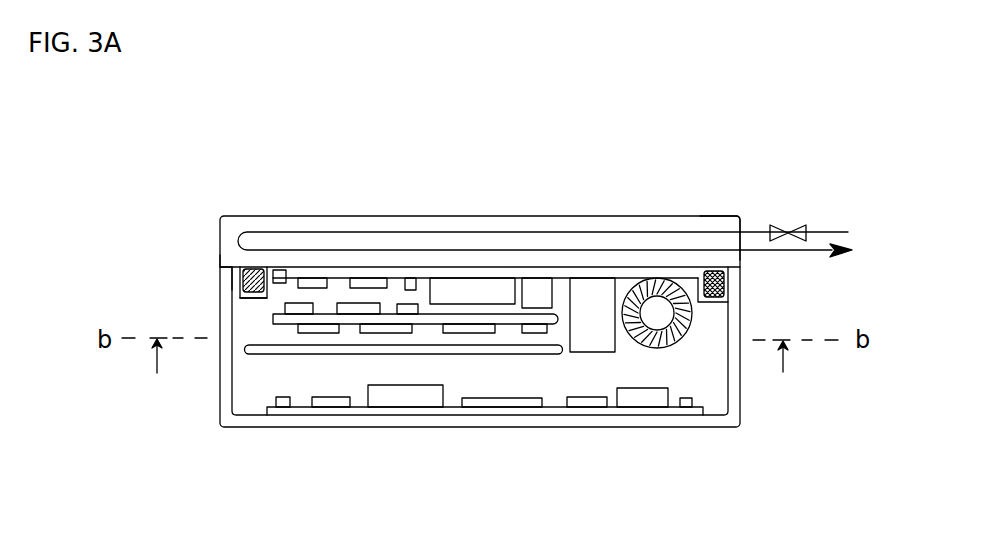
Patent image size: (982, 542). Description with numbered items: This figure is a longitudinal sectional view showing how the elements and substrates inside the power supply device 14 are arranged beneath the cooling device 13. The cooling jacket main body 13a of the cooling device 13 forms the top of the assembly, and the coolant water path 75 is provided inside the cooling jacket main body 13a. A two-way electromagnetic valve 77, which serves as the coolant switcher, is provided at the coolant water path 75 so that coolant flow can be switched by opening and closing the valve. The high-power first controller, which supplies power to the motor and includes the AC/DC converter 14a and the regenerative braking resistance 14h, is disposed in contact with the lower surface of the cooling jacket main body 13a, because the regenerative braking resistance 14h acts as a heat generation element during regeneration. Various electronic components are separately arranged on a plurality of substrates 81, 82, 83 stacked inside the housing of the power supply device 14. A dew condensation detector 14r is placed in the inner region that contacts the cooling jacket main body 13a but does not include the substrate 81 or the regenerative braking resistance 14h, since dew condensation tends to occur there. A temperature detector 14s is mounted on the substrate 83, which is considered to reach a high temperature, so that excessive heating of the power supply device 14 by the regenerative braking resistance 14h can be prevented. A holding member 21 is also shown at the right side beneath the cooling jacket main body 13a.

The cooling device 13 is at (673, 217).
The cooling jacket main body 13a is at (733, 216).
The power supply device 14 is at (672, 427).
The AC/DC converter 14a is at (222, 263).
The regenerative braking resistance 14h is at (234, 276).
The dew condensation detector 14r is at (267, 300).
The temperature detector 14s is at (304, 307).
The holding member 21 is at (712, 303).
The coolant water path 75 is at (288, 231).
The two-way electromagnetic valve 77 is at (812, 222).
The substrate 81 is at (393, 271).
The substrate 82 is at (398, 412).
The substrate 83 is at (515, 312).